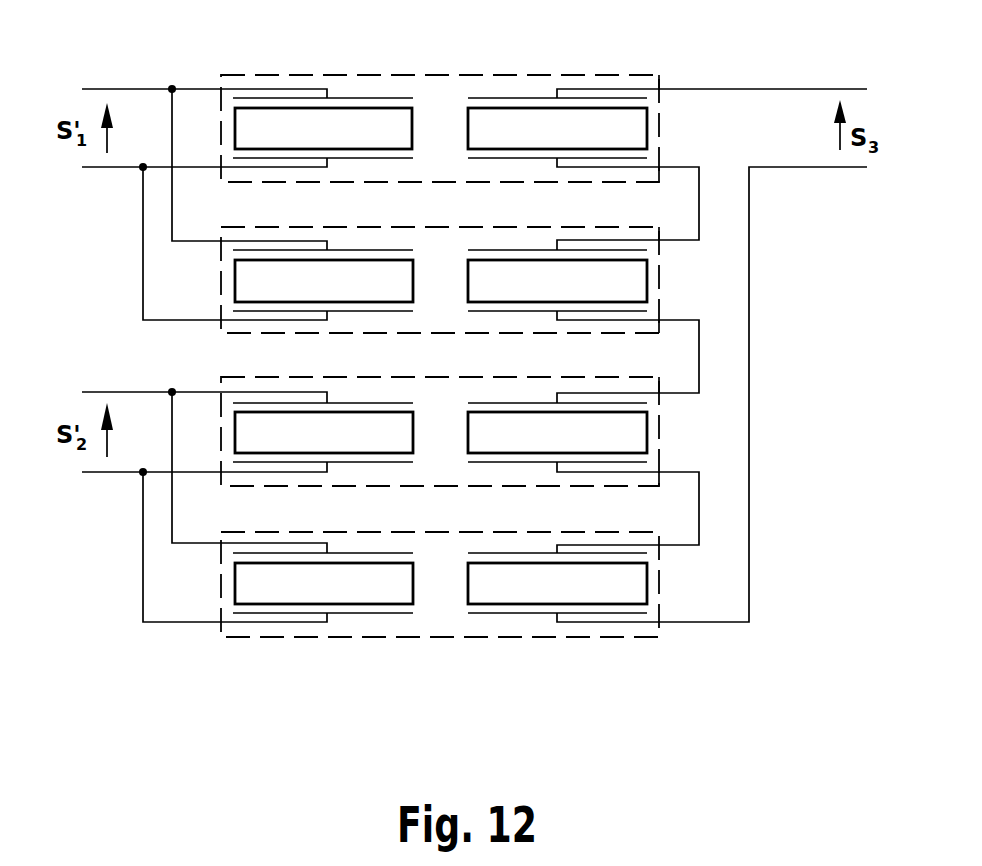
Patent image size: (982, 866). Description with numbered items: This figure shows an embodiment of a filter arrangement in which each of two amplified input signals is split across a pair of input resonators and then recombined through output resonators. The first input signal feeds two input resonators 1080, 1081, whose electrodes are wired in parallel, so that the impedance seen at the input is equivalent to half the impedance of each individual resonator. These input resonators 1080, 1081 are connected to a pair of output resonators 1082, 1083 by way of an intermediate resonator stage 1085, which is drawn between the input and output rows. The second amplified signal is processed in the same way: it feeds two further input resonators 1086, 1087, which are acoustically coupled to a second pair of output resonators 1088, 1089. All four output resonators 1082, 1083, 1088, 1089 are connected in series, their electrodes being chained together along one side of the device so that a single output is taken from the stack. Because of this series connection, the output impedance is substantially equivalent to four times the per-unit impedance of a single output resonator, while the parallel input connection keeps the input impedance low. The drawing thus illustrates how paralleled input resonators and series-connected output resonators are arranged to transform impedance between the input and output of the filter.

The input resonator 1080 is at (337, 118).
The input resonator 1081 is at (383, 272).
The output resonator 1082 is at (523, 118).
The output resonator 1083 is at (623, 283).
The resonator stage 1085 is at (642, 212).
The input resonator 1086 is at (370, 583).
The input resonator 1087 is at (383, 437).
The output resonator 1088 is at (633, 433).
The output resonator 1089 is at (632, 583).